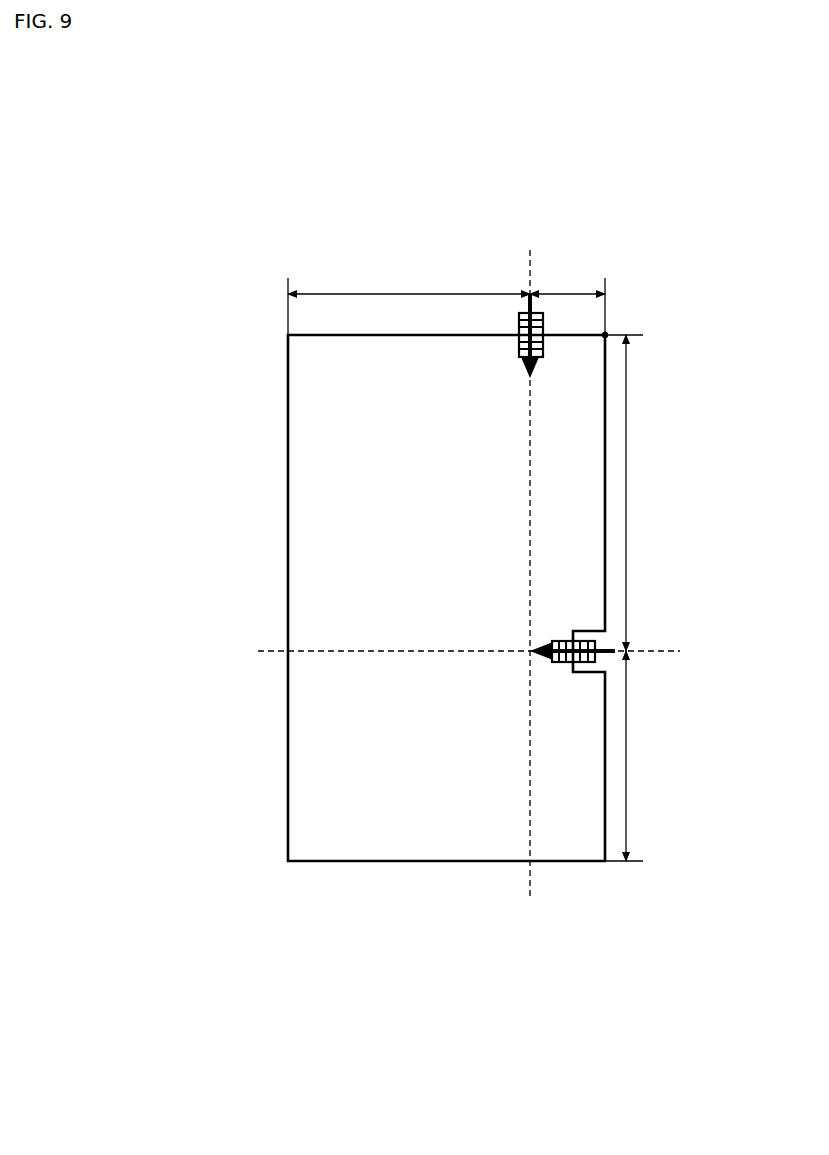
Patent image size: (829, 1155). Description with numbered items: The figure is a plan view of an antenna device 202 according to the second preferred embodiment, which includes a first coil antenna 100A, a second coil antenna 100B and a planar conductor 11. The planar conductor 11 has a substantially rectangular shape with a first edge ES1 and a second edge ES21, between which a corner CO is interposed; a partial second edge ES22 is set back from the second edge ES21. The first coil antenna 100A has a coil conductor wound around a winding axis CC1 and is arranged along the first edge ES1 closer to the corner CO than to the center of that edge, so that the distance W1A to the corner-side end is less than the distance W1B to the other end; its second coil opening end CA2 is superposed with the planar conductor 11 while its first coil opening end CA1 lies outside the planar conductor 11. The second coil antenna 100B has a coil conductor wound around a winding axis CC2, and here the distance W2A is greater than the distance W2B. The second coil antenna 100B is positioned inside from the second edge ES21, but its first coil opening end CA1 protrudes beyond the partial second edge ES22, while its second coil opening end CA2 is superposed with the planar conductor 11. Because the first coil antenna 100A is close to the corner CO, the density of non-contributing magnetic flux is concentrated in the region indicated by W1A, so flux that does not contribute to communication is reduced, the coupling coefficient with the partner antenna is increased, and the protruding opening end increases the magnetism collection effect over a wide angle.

The antenna device 202 is at (307, 212).
The planar conductor 11 is at (306, 549).
The first coil antenna 100A is at (519, 345).
The second coil antenna 100B is at (565, 641).
The first coil opening end CA1 is at (524, 309).
The second coil opening end CA2 is at (524, 366).
The corner CO is at (608, 333).
The winding axis CC1 is at (530, 549).
The winding axis CC2 is at (493, 651).
The distance from end of first edge to first coil antenna W1A is at (567, 301).
The distance from end of first edge to first coil antenna W1B is at (409, 301).
The distance from end of second edge to second coil antenna W2A is at (631, 493).
The distance from end of second edge to second coil antenna W2B is at (631, 756).
The first edge ES1 is at (288, 335).
The second edge ES21 is at (605, 908).
The partial second edge ES22 is at (573, 908).